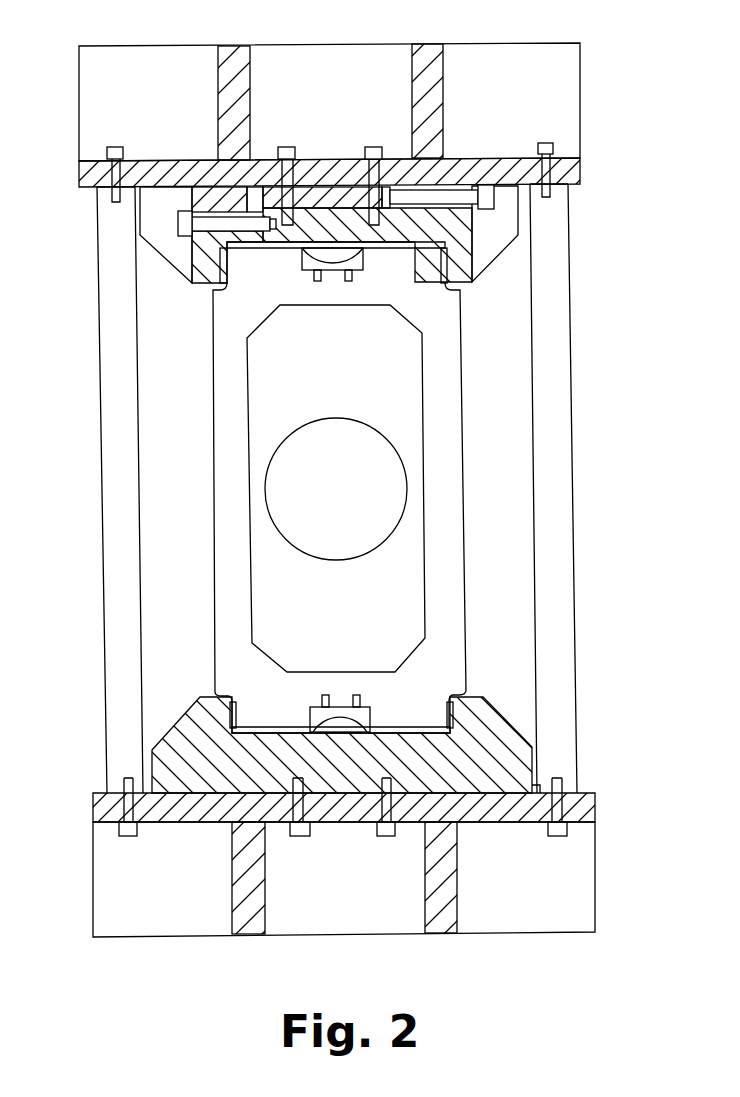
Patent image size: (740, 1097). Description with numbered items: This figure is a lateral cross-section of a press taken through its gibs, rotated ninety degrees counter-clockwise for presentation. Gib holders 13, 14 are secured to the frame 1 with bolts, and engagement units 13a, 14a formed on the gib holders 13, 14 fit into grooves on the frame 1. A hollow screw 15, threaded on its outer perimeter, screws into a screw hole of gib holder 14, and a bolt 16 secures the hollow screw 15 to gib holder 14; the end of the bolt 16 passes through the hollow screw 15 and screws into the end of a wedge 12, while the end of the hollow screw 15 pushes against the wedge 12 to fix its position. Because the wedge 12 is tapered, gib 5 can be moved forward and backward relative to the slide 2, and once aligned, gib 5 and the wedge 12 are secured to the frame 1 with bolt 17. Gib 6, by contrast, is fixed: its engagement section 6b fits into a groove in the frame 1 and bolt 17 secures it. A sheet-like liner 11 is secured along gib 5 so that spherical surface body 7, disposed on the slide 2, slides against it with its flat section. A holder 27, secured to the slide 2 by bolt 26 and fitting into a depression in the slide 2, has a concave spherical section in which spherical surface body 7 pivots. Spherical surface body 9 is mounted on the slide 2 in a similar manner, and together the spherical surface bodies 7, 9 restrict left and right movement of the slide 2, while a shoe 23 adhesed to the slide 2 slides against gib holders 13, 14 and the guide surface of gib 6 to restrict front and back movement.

The frame 1 is at (232, 77).
The slide 2 is at (446, 437).
The gib 5 is at (397, 240).
The gib 6 is at (480, 741).
The engagement section 6b is at (538, 788).
The spherical surface body 7 is at (350, 250).
The spherical surface body 9 is at (342, 722).
The liner 11 is at (302, 250).
The wedge 12 is at (322, 200).
The gib holder 13 is at (170, 195).
The engagement unit 13a is at (146, 187).
The gib holder 14 is at (532, 206).
The engagement unit 14a is at (519, 185).
The hollow screw 15 is at (178, 222).
The bolt 16 is at (168, 232).
The bolt 17 is at (286, 147).
The shoe 23 is at (220, 268).
The bolt 26 is at (311, 283).
The holder 27 is at (329, 282).